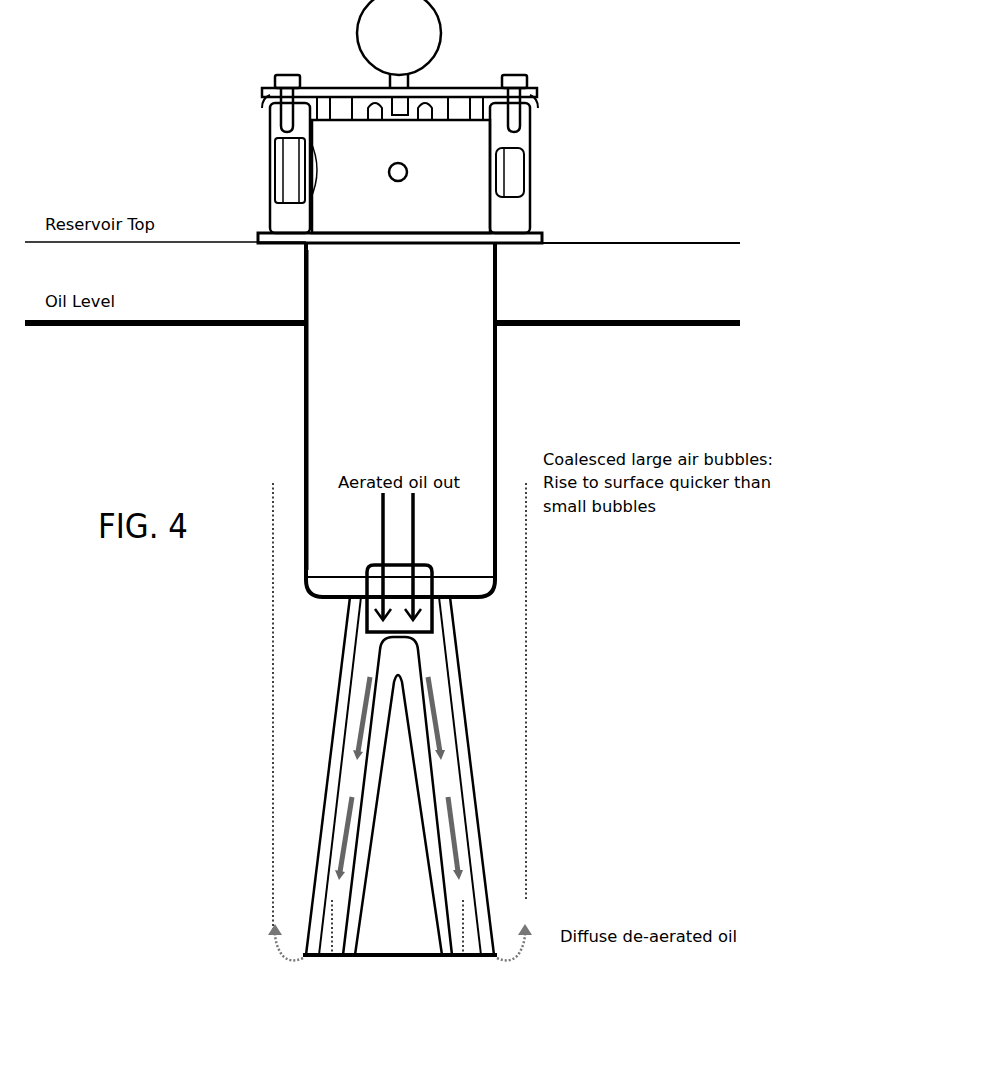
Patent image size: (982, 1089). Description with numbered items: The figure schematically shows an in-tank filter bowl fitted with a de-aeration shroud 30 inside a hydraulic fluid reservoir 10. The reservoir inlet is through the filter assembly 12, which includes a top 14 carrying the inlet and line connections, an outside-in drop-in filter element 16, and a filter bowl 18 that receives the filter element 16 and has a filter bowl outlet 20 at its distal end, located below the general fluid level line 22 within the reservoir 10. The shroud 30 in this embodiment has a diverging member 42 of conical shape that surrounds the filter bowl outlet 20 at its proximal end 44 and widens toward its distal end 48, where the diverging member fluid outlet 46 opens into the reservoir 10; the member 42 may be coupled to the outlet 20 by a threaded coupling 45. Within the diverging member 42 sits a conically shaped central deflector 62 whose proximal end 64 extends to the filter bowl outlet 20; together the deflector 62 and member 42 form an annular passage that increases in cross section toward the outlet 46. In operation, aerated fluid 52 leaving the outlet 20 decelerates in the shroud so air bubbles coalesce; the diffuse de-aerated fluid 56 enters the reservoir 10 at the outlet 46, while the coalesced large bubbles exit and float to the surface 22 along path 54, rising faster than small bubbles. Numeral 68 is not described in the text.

The reservoir 10 is at (647, 242).
The filter assembly 12 is at (645, 130).
The top 14 is at (454, 217).
The filter element 16 is at (434, 364).
The filter bowl 18 is at (496, 303).
The filter bowl outlet 20 is at (434, 565).
The fluid level line 22 is at (652, 319).
The de-aeration shroud 30 is at (453, 807).
The diverging member 42 is at (453, 715).
The proximal end 44 is at (443, 633).
The threaded coupling 45 is at (440, 620).
The diverging member fluid outlet 46 is at (330, 958).
The distal end 48 is at (488, 960).
The aerated fluid 52 is at (378, 538).
The path 54 is at (522, 952).
The diffuse de-aerated fluid 56 is at (345, 822).
The central deflector 62 is at (431, 866).
The proximal end 64 is at (388, 652).
The base plate 68 is at (442, 950).